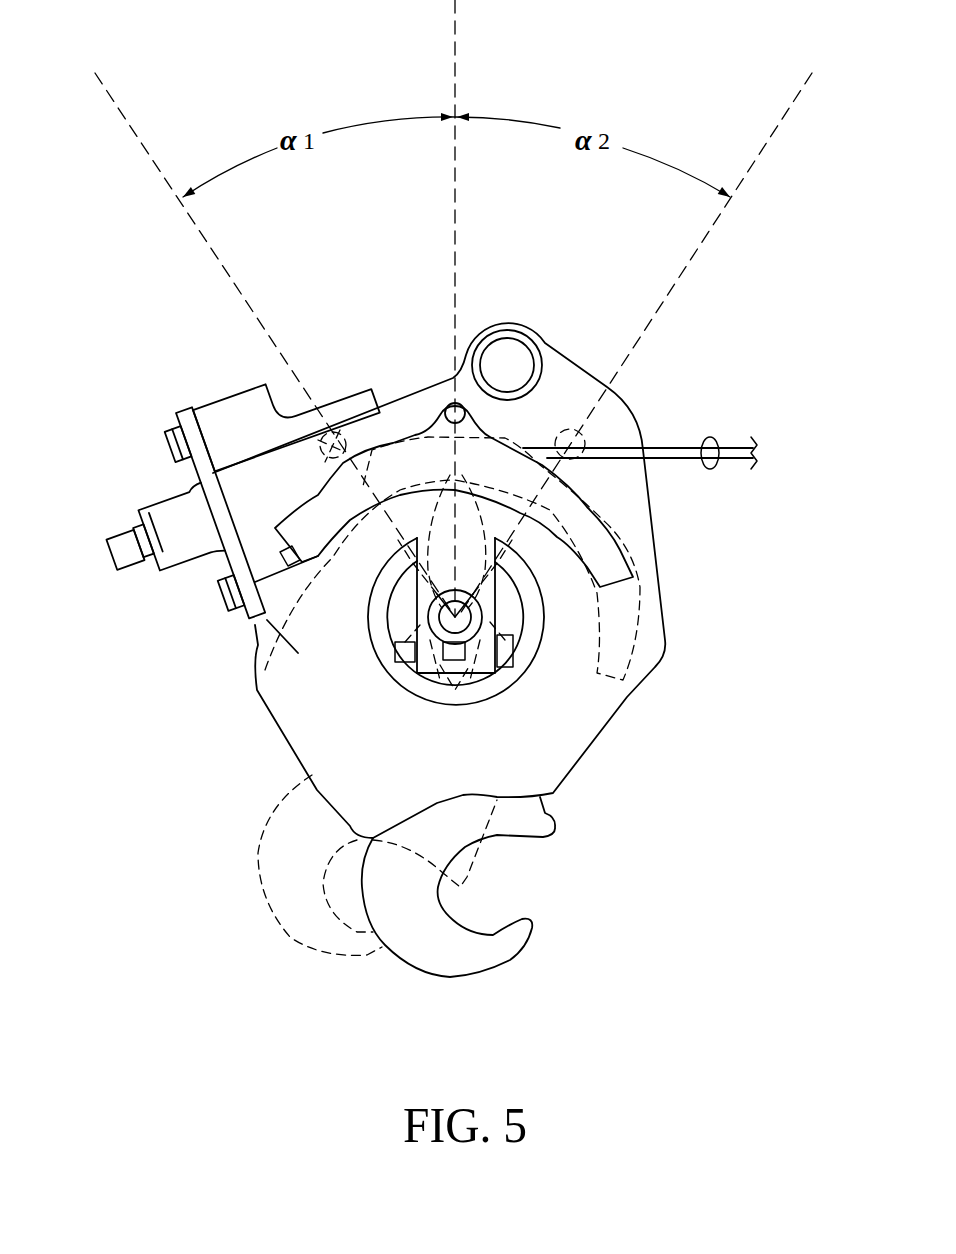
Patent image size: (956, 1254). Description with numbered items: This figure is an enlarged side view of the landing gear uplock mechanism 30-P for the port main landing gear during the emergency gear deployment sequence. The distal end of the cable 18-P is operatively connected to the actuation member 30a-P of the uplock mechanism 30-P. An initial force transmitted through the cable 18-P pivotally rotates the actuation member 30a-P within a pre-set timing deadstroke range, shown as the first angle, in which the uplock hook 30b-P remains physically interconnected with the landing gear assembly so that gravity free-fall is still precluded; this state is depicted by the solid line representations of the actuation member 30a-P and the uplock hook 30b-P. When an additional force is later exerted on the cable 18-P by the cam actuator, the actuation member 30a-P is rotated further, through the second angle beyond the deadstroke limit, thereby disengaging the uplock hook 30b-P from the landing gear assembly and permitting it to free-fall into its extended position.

The gear uplock mechanism 30-P is at (421, 762).
The actuation member 30a-P is at (612, 557).
The uplock hook 30b-P is at (448, 957).
The cable 18-P is at (724, 458).